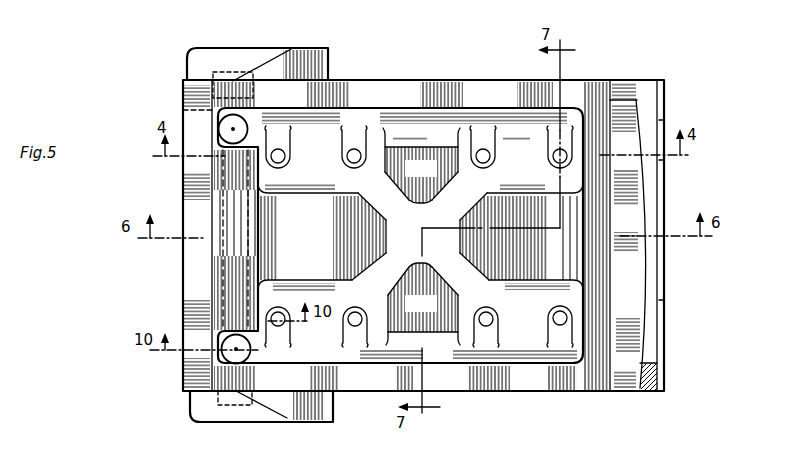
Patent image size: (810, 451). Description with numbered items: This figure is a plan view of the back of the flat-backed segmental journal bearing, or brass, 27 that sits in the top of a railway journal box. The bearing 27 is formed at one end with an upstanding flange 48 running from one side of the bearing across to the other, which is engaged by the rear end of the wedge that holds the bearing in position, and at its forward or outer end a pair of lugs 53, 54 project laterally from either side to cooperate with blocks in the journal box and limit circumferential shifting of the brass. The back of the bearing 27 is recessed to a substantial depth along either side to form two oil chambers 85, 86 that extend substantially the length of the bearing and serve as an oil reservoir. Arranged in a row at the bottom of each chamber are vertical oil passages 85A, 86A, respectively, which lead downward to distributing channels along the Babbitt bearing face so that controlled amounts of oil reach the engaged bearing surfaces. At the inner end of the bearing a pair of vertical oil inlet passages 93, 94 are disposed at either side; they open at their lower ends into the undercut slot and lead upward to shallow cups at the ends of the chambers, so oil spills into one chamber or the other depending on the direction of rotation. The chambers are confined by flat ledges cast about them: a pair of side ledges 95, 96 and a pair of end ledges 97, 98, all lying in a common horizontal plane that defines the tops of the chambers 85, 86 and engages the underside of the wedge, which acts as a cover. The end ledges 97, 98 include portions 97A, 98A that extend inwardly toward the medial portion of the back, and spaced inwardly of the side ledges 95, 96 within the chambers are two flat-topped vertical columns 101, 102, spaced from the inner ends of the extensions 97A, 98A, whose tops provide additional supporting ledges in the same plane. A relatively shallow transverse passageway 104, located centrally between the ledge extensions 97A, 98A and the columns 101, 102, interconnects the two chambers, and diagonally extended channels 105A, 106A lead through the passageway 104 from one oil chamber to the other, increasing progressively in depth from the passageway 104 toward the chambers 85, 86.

The journal bearing 27 is at (439, 80).
The upstanding flange 48 is at (627, 349).
The lug 53 is at (243, 55).
The lug 54 is at (249, 413).
The oil chamber 85 is at (317, 160).
The vertical oil passages 85A is at (283, 153).
The oil chamber 86 is at (523, 311).
The vertical oil passages 86A is at (355, 330).
The vertical oil inlet passage 93 is at (238, 126).
The vertical oil inlet passage 94 is at (247, 357).
The flat side ledge 95 is at (347, 97).
The flat side ledge 96 is at (503, 374).
The flat end ledge 97 is at (232, 267).
The ledge extension 97A is at (323, 238).
The flat end ledge 98 is at (598, 312).
The ledge extension 98A is at (521, 238).
The flat-topped vertical column 101 is at (421, 166).
The flat-topped vertical column 102 is at (423, 304).
The transverse passageway 104 is at (434, 242).
The diagonal channel 105A is at (422, 196).
The diagonal channel 106A is at (420, 274).